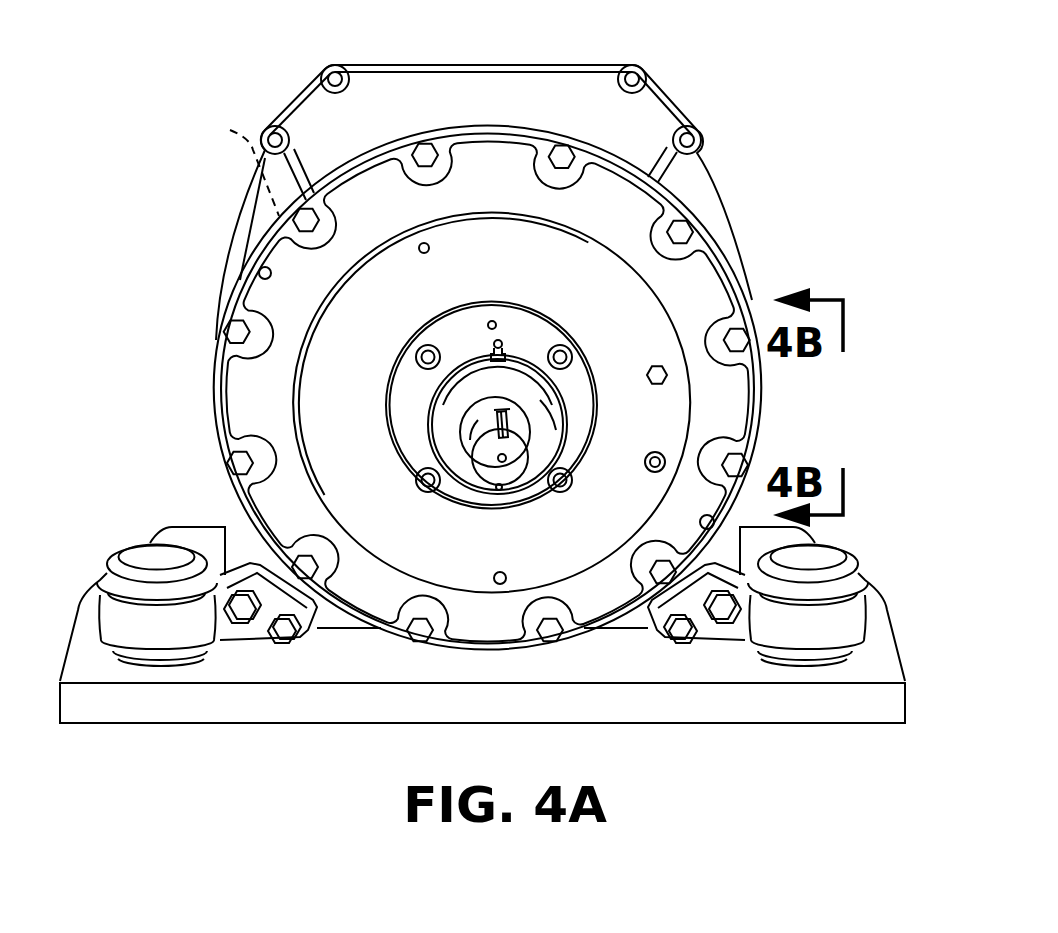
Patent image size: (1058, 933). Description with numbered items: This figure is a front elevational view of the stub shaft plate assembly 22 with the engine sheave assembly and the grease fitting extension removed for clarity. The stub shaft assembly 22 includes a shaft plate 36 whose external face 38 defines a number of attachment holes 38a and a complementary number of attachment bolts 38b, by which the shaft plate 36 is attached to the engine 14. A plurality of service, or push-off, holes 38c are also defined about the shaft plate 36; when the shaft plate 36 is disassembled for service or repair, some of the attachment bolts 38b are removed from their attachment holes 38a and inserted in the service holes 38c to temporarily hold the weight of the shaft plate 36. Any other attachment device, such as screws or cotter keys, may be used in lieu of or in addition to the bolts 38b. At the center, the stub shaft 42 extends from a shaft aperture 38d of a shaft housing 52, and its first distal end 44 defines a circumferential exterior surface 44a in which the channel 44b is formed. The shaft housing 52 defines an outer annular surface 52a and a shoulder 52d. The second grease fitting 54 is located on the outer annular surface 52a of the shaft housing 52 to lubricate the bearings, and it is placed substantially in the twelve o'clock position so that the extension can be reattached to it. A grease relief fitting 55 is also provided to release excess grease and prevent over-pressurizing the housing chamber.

The engine 14 is at (562, 83).
The stub shaft plate assembly 22 is at (183, 300).
The shaft plate 36 is at (243, 390).
The external face 38 is at (366, 209).
The attachment holes 38a is at (232, 131).
The attachment bolts 38b is at (301, 208).
The service holes 38c is at (258, 273).
The shaft aperture 38d is at (478, 410).
The stub shaft 42 is at (476, 423).
The first distal end 44 is at (503, 458).
The circumferential exterior surface 44a is at (470, 432).
The channel 44b is at (512, 400).
The shaft housing 52 is at (530, 356).
The outer annular surface 52a is at (462, 366).
The shoulder 52d is at (548, 425).
The second grease fitting 54 is at (505, 330).
The grease relief fitting 55 is at (496, 489).